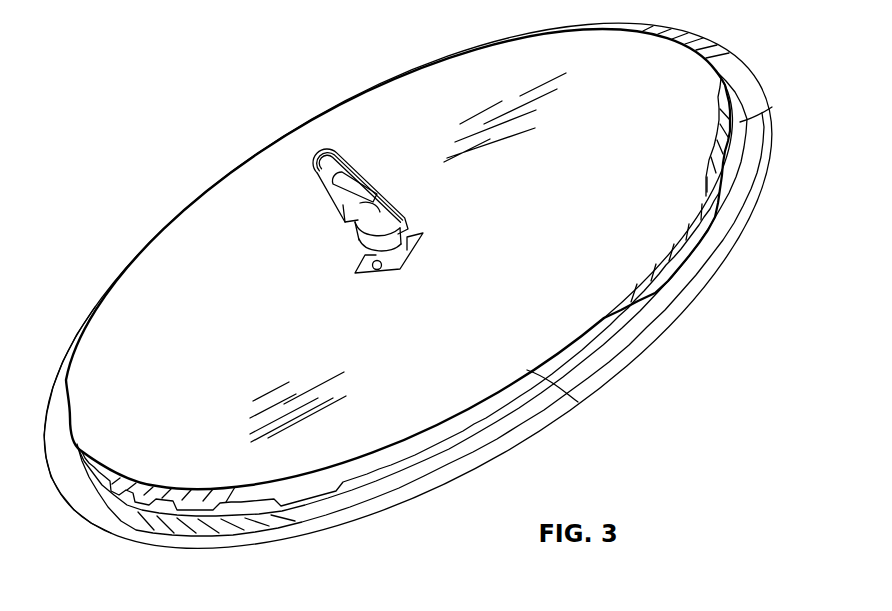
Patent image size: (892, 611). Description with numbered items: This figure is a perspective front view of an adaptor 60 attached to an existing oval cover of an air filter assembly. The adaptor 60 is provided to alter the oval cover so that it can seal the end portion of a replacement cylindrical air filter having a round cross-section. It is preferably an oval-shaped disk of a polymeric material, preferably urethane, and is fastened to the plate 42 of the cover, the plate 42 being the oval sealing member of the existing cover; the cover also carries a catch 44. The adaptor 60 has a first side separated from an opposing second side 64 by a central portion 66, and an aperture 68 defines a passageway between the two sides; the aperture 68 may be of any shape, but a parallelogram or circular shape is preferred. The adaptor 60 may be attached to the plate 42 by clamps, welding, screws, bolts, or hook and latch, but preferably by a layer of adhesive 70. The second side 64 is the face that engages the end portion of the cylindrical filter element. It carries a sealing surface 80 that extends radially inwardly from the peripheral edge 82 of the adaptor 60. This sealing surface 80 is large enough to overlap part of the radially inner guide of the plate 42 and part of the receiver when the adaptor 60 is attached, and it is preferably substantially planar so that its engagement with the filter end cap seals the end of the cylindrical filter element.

The plate 42 is at (752, 120).
The catch 44 is at (350, 158).
The adaptor 60 is at (718, 76).
The second side 64 is at (93, 345).
The central portion 66 is at (713, 182).
The aperture 68 is at (413, 253).
The layer of adhesive 70 is at (625, 316).
The sealing surface 80 is at (264, 264).
The peripheral edge 82 is at (578, 402).